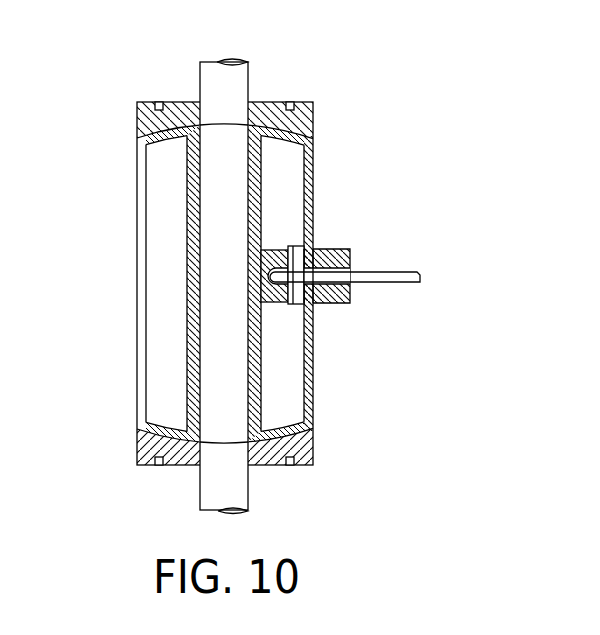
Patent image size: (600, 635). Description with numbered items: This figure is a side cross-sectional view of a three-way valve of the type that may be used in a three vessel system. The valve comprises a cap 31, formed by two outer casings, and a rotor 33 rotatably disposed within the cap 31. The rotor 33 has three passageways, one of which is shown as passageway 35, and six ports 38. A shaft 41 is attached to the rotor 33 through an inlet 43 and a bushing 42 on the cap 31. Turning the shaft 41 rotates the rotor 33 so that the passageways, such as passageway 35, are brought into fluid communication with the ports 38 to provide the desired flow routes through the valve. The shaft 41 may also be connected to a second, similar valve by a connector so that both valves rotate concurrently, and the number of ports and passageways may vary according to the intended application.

The cap 31 is at (305, 125).
The rotor 33 is at (255, 128).
The passageway 35 is at (207, 252).
The port 38 is at (215, 84).
The shaft 41 is at (360, 277).
The bushing 42 is at (346, 263).
The inlet 43 is at (332, 247).